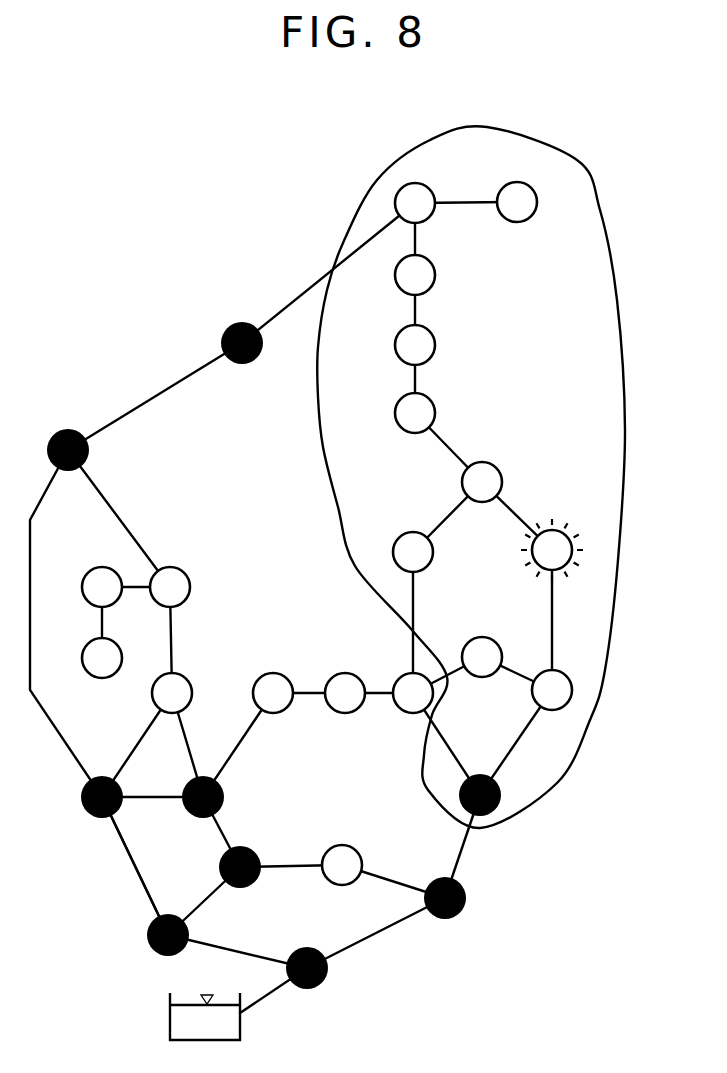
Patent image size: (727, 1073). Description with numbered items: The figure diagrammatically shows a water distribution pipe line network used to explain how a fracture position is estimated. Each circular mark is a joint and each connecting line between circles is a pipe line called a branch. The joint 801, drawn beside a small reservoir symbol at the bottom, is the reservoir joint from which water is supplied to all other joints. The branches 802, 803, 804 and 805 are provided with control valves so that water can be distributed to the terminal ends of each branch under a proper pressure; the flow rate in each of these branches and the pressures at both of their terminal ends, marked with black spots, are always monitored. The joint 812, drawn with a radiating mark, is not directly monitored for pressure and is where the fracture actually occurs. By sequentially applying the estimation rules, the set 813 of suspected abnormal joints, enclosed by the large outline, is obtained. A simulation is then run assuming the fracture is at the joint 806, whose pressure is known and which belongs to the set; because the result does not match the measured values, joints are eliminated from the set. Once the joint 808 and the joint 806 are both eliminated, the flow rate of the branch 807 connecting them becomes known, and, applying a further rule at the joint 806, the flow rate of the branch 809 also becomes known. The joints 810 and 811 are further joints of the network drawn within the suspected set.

The reservoir joint 801 is at (330, 977).
The branch 802 is at (465, 848).
The branch 803 is at (130, 860).
The branch 804 is at (222, 830).
The branch 805 is at (153, 393).
The joint 806 is at (500, 800).
The branch 807 is at (447, 748).
The joint 808 is at (397, 710).
The branch 809 is at (525, 732).
The joint 810 is at (573, 680).
The joint 811 is at (487, 638).
The joint 812 is at (567, 528).
The set of suspected abnormal joints 813 is at (577, 160).